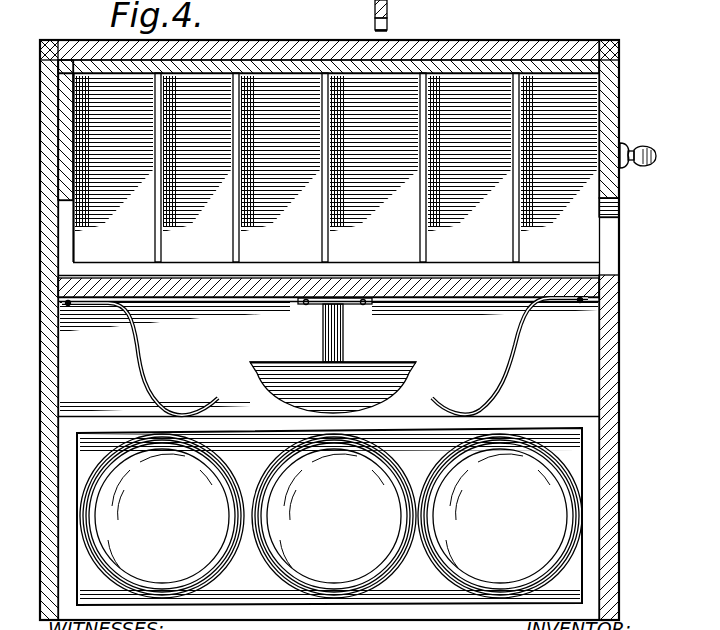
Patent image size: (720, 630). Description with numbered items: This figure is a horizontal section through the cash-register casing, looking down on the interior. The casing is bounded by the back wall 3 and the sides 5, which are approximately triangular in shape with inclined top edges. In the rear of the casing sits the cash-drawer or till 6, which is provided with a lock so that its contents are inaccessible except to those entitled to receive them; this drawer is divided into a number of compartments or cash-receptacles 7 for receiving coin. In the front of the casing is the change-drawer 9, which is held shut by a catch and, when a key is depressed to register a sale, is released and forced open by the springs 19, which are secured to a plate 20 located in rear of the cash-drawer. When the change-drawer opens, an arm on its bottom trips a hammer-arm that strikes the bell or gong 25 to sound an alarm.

The back wall 3 is at (348, 16).
The sides 5 is at (334, 330).
The cash-drawer or till 6 is at (60, 128).
The compartments or cash-receptacles 7 is at (336, 168).
The change-drawer 9 is at (329, 516).
The springs 19 is at (325, 357).
The plate 20 is at (432, 289).
The bell or gong 25 is at (333, 358).